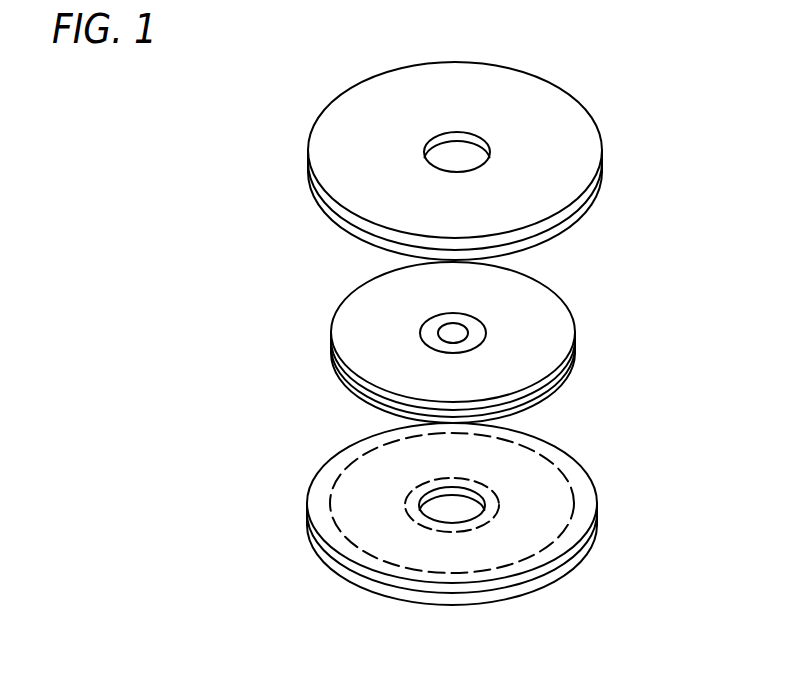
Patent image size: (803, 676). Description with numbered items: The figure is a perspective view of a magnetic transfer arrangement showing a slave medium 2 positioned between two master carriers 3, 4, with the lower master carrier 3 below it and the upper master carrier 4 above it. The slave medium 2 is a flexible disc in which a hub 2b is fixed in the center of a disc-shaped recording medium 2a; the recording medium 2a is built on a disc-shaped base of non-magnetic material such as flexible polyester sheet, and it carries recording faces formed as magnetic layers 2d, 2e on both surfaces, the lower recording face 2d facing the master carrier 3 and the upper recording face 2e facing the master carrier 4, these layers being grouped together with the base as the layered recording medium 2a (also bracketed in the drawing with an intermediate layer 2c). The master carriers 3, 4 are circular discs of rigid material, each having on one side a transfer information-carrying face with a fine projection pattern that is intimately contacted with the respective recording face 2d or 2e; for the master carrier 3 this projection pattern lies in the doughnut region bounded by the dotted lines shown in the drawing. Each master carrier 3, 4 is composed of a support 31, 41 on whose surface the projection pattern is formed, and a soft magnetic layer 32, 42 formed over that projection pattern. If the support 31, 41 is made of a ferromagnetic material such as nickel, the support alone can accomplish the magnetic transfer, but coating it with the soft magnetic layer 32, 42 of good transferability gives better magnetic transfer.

The slave medium 2 is at (425, 336).
The recording medium 2a is at (366, 340).
The hub 2b is at (457, 335).
The intermediate layer 2c is at (337, 377).
The lower recording face 2d is at (342, 403).
The upper recording face 2e is at (333, 352).
The master carrier 3 is at (447, 514).
The support 31 is at (335, 571).
The soft magnetic layer 32 is at (313, 532).
The master carrier 4 is at (451, 161).
The support 41 is at (313, 198).
The soft magnetic layer 42 is at (318, 229).